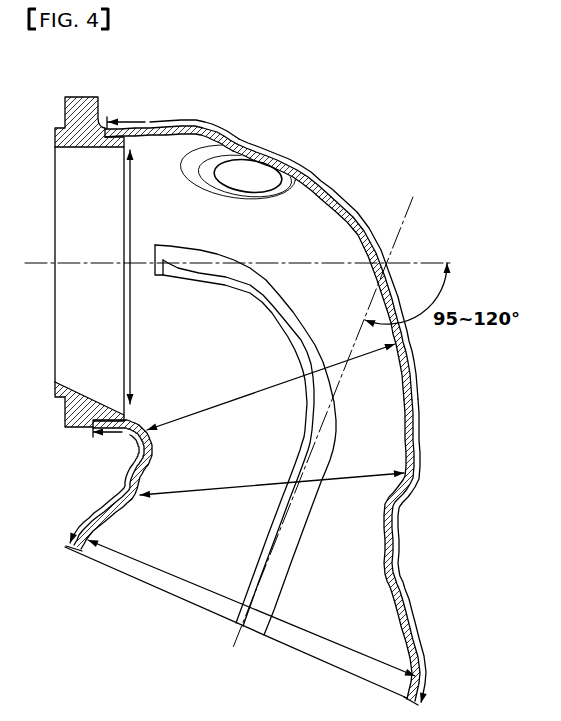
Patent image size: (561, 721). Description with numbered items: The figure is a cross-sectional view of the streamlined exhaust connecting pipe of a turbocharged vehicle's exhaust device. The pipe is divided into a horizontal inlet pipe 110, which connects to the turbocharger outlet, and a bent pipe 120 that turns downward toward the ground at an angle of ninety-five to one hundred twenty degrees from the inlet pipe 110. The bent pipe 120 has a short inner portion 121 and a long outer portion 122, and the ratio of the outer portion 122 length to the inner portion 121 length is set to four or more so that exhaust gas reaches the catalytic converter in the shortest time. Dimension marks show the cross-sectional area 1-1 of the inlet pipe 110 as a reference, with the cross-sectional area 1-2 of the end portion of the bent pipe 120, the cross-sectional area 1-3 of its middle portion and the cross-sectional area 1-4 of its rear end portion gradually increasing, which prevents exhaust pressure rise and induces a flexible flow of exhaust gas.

The inlet pipe 110 is at (148, 122).
The outer portion 122 is at (325, 183).
The bent pipe 120 is at (411, 355).
The inner portion 121 is at (118, 500).
The cross-sectional area of the inlet pipe 1-1 is at (130, 342).
The cross-sectional area of the end portion of the bent pipe 1-2 is at (353, 345).
The cross-sectional area of the middle portion of the bent pipe 1-3 is at (208, 490).
The cross-sectional area of the rear end portion of the bent pipe 1-4 is at (170, 573).